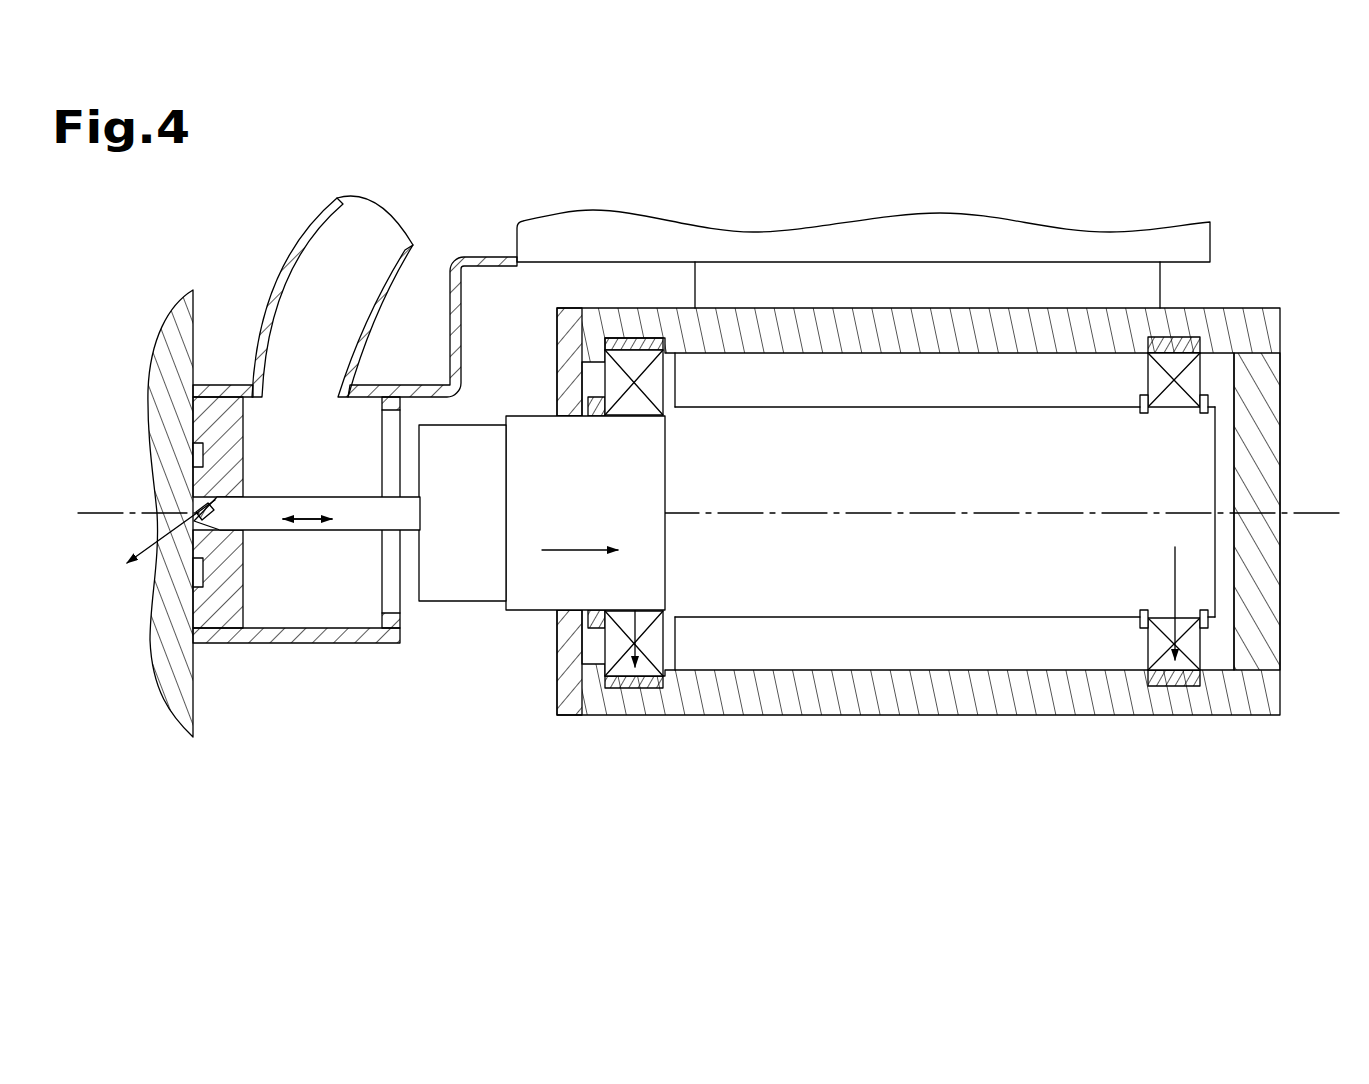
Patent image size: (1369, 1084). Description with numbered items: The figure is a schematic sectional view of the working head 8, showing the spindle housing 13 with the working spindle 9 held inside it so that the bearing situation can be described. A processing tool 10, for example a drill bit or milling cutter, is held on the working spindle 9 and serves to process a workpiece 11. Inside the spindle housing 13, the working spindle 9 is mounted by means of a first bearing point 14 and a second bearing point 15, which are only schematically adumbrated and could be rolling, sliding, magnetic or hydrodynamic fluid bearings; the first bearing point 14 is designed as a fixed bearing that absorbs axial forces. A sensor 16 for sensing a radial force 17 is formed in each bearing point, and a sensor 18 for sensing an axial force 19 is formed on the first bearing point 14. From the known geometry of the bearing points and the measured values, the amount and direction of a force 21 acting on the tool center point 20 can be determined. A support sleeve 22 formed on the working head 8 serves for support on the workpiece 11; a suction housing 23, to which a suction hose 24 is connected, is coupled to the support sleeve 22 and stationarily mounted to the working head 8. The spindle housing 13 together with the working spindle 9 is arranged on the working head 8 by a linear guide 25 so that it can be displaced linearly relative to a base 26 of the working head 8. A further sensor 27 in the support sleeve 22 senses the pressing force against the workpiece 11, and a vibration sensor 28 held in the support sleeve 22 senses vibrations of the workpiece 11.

The working head 8 is at (1183, 165).
The working spindle 9 is at (1202, 557).
The processing tool 10 is at (263, 520).
The workpiece 11 is at (163, 678).
The spindle housing 13 is at (927, 693).
The first bearing point 14 is at (667, 697).
The second bearing point 15 is at (1230, 687).
The sensor 16 is at (617, 683).
The radial force 17 is at (633, 577).
The sensor 18 is at (677, 680).
The axial force 19 is at (565, 552).
The tool center point 20 is at (200, 643).
The force 21 is at (130, 565).
The support sleeve 22 is at (238, 398).
The suction housing 23 is at (353, 660).
The suction hose 24 is at (342, 233).
The linear guide 25 is at (1193, 271).
The base 26 is at (897, 240).
The further sensor 27 is at (240, 423).
The vibration sensor 28 is at (190, 590).